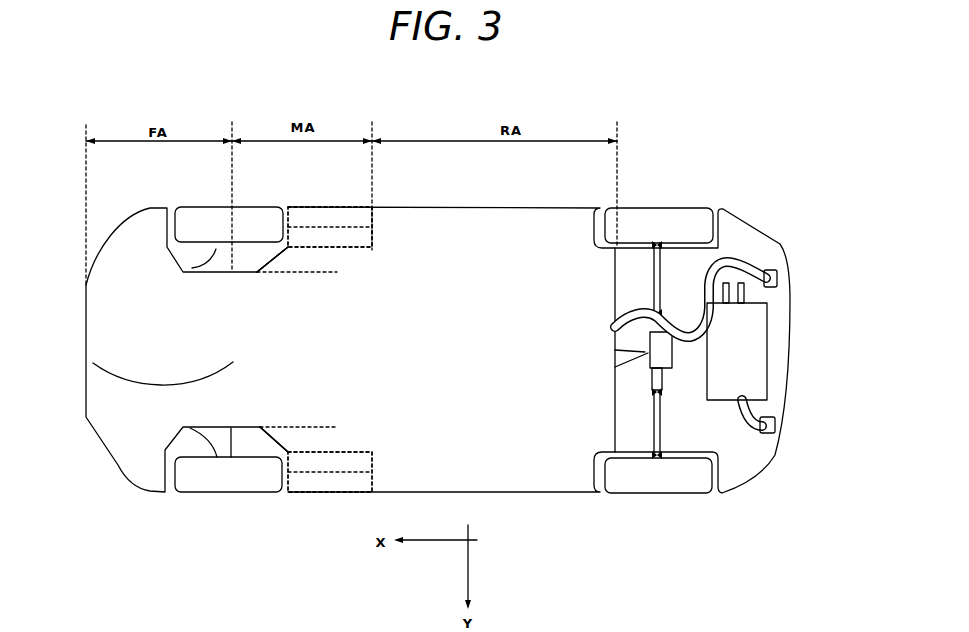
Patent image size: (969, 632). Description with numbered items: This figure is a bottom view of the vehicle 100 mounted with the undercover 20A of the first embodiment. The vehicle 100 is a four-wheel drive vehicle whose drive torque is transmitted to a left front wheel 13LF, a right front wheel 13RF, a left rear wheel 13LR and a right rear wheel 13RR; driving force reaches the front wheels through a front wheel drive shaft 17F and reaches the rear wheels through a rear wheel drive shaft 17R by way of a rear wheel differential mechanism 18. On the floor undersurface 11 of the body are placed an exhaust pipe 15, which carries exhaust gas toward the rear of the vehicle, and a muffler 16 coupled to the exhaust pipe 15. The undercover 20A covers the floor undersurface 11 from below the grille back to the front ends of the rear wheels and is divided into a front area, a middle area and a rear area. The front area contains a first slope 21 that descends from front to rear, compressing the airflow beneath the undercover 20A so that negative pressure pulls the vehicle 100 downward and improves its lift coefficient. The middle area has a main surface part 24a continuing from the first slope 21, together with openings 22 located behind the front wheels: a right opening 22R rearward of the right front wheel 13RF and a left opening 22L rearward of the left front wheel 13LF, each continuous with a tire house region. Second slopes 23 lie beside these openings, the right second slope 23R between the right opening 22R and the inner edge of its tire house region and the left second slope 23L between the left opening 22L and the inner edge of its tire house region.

The vehicle 100 is at (787, 85).
The floor undersurface 11 is at (679, 428).
The left front wheel 13LF is at (262, 215).
The right front wheel 13RF is at (192, 480).
The left rear wheel 13LR is at (660, 220).
The right rear wheel 13RR is at (642, 480).
The exhaust pipe 15 is at (723, 260).
The muffler 16 is at (750, 347).
The front wheel drive shaft 17F is at (221, 253).
The rear wheel drive shaft 17R is at (637, 270).
The rear wheel differential mechanism 18 is at (617, 363).
The undercover 20A is at (121, 479).
The first slope 21 is at (125, 318).
The openings 22 is at (330, 393).
The left opening 22L is at (323, 235).
The right opening 22R is at (316, 463).
The second slope 23 is at (285, 328).
The left second slope 23L is at (300, 257).
The right second slope 23R is at (293, 440).
The main surface part 24a is at (93, 363).